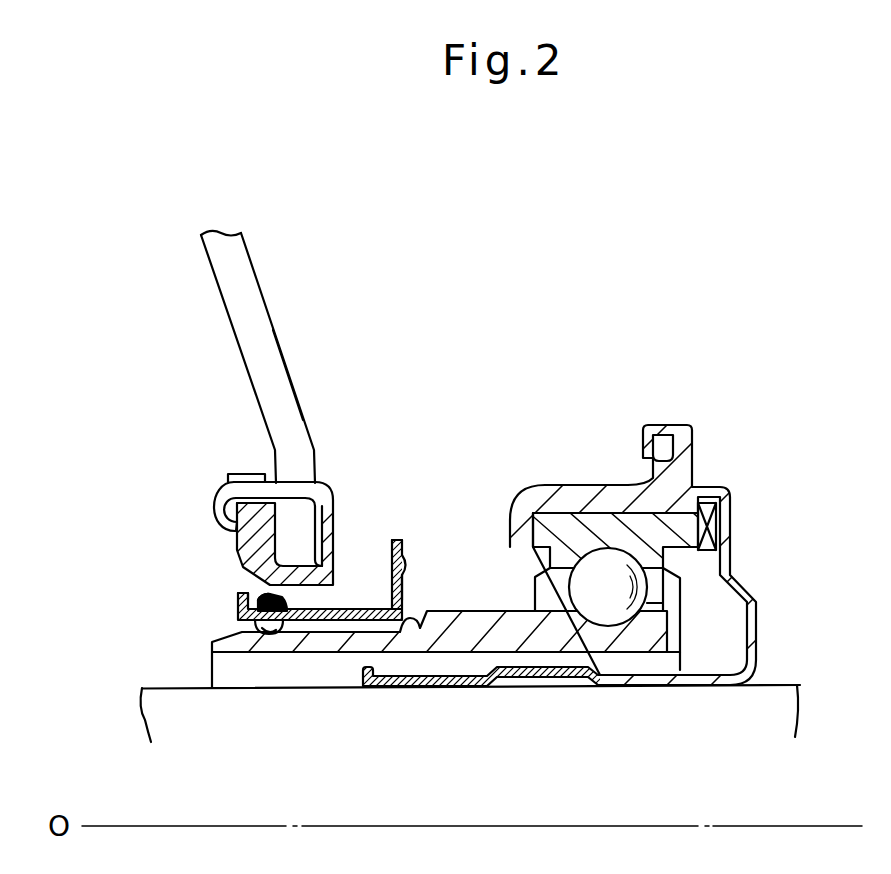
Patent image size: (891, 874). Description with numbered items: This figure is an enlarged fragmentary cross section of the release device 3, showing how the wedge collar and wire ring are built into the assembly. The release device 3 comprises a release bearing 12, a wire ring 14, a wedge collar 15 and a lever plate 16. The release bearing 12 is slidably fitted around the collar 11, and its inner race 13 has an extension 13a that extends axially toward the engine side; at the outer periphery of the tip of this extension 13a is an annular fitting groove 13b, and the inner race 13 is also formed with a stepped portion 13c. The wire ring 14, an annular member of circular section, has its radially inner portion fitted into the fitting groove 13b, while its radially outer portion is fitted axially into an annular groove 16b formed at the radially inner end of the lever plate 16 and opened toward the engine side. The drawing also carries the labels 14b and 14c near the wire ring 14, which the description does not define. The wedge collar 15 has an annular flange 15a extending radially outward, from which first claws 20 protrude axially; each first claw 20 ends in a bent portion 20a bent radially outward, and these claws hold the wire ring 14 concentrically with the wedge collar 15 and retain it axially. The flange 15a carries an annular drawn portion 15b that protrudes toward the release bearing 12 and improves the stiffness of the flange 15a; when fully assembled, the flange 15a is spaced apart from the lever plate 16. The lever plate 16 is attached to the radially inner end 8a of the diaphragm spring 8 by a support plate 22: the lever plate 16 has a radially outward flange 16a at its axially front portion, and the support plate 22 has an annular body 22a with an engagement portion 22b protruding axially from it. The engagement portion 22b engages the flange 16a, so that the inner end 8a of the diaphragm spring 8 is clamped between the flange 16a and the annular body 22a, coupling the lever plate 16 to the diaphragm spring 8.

The release device 3 is at (497, 368).
The diaphragm spring 8 is at (265, 276).
The radially inner end 8a is at (265, 345).
The collar 11 is at (780, 684).
The release bearing 12 is at (513, 568).
The inner race 13 is at (562, 637).
The extension 13a is at (325, 640).
The annular fitting groove 13b is at (300, 636).
The stepped portion 13c is at (404, 630).
The wire ring 14 is at (233, 623).
The spring clip upper portion 14b is at (248, 590).
The spring clip head 14c is at (262, 628).
The wedge collar 15 is at (402, 528).
The annular flange 15a is at (403, 548).
The annular drawn portion 15b is at (405, 573).
The lever plate 16 is at (222, 545).
The radially outward flange 16a is at (255, 512).
The annular groove 16b is at (343, 570).
The first claws 20 is at (362, 598).
The bent portion 20a is at (244, 606).
The support plate 22 is at (320, 479).
The annular body 22a is at (340, 510).
The engagement portion 22b is at (224, 532).